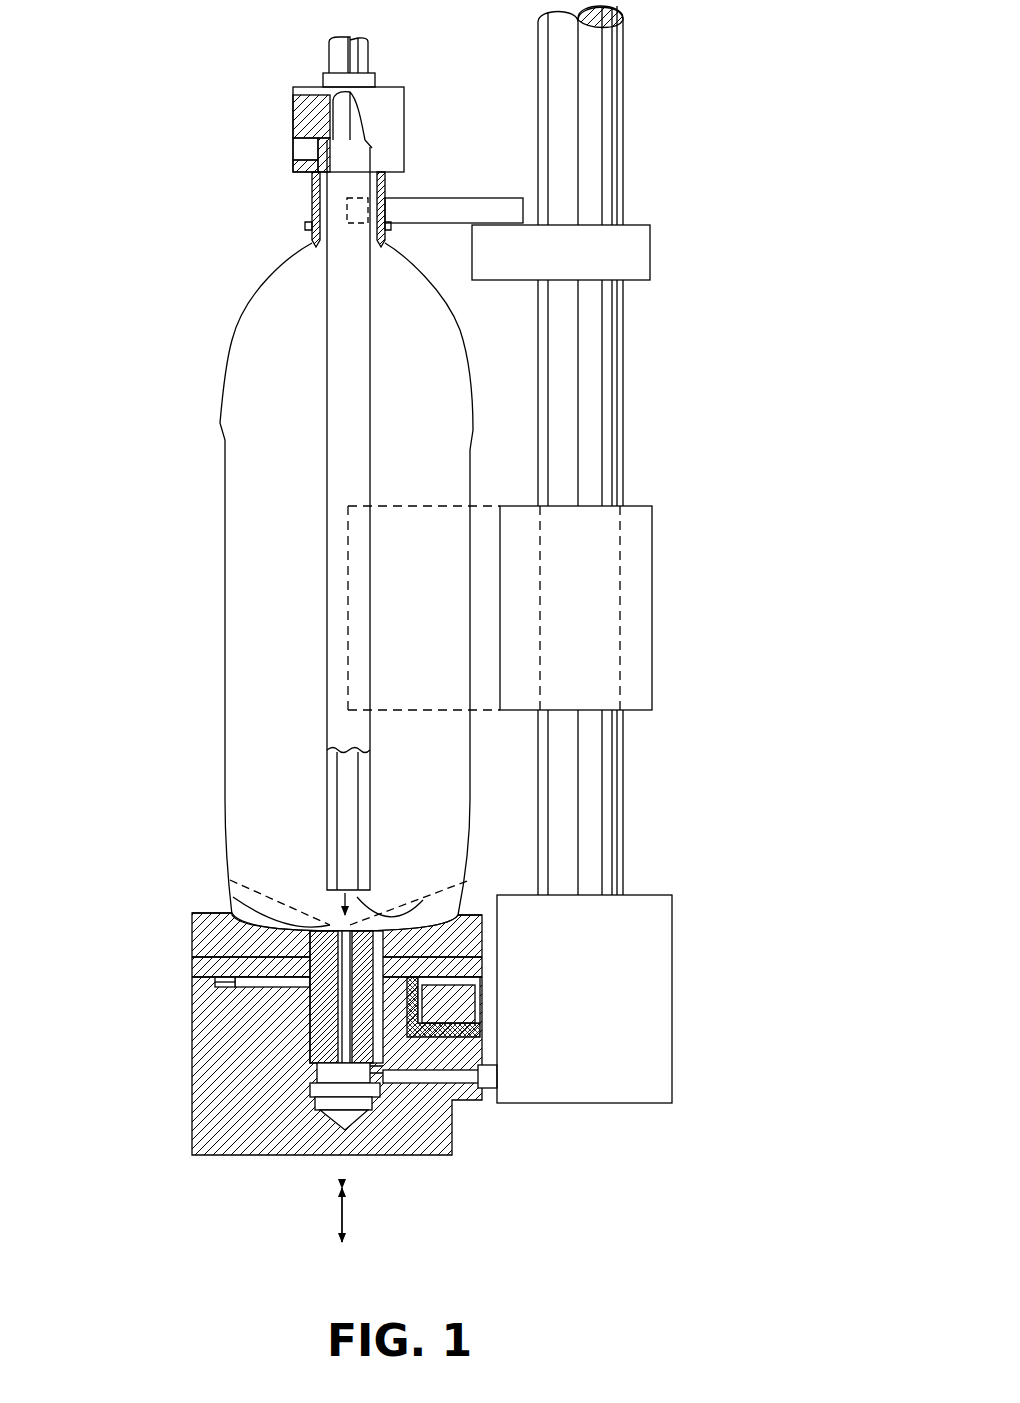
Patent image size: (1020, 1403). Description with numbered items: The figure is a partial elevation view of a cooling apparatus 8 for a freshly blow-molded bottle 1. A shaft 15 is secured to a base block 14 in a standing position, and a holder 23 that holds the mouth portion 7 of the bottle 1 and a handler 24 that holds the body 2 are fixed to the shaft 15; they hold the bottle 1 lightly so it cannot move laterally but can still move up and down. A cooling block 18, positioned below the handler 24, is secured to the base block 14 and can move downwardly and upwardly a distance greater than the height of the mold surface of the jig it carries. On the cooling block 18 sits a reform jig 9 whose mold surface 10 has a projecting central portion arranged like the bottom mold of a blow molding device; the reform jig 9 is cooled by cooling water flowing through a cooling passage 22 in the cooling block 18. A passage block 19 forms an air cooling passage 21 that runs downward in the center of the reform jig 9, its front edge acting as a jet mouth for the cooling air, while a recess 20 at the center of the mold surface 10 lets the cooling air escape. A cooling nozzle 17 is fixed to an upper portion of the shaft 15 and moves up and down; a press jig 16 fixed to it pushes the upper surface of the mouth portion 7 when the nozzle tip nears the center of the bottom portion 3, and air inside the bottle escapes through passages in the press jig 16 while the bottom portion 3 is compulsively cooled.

The bottle 1 is at (318, 551).
The body 2 is at (225, 580).
The bottom portion 3 is at (332, 930).
The mouth portion 7 is at (312, 181).
The cooling apparatus 8 is at (638, 404).
The reform jig 9 is at (310, 935).
The mold surface 10 is at (262, 945).
The base block 14 is at (672, 933).
The shaft 15 is at (622, 450).
The press jig 16 is at (404, 110).
The cooling nozzle 17 is at (327, 692).
The cooling block 18 is at (318, 1058).
The passage block 19 is at (310, 1022).
The recess 20 is at (312, 962).
The air cooling passage 21 is at (452, 1095).
The cooling passage 22 is at (425, 1040).
The holder 23 is at (480, 198).
The handler 24 is at (483, 506).